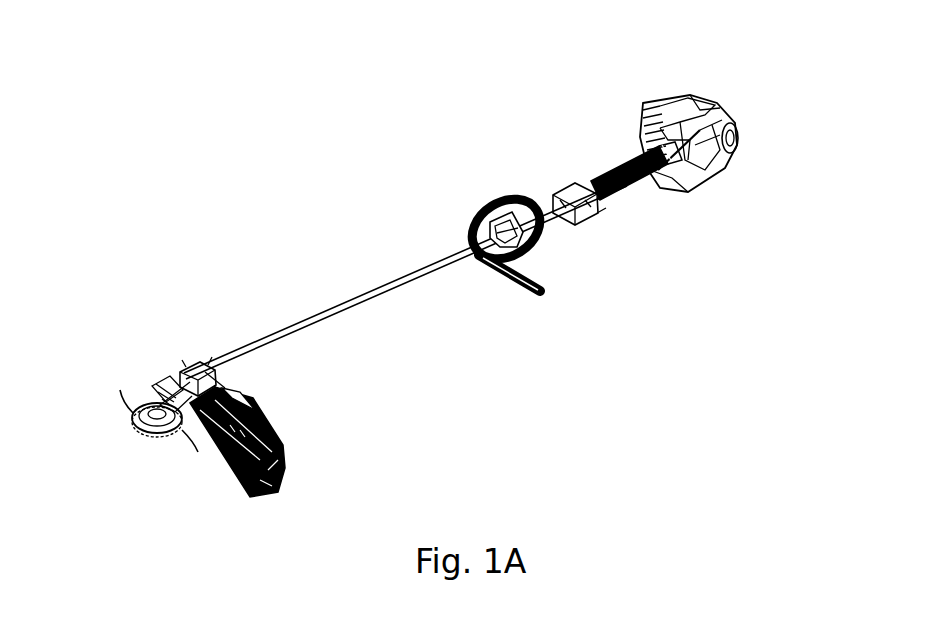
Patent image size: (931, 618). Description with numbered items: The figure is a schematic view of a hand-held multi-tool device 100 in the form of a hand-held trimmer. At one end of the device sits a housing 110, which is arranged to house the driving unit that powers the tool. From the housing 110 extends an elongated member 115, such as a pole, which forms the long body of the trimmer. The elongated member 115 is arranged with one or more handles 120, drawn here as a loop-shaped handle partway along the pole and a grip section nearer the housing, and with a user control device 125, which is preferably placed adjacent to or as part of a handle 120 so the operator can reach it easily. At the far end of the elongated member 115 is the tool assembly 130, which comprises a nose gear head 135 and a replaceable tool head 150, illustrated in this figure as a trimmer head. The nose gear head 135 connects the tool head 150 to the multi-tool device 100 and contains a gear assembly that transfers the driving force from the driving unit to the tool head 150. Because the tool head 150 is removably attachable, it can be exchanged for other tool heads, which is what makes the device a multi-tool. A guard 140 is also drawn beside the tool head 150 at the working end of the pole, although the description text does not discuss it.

The multi-tool device 100 is at (457, 142).
The housing 110 is at (717, 177).
The elongated member 115 is at (400, 287).
The handle 120 is at (628, 185).
The user control device 125 is at (587, 220).
The tool assembly 130 is at (172, 338).
The nose gear head 135 is at (170, 370).
The guard 140 is at (253, 473).
The tool head 150 is at (143, 437).